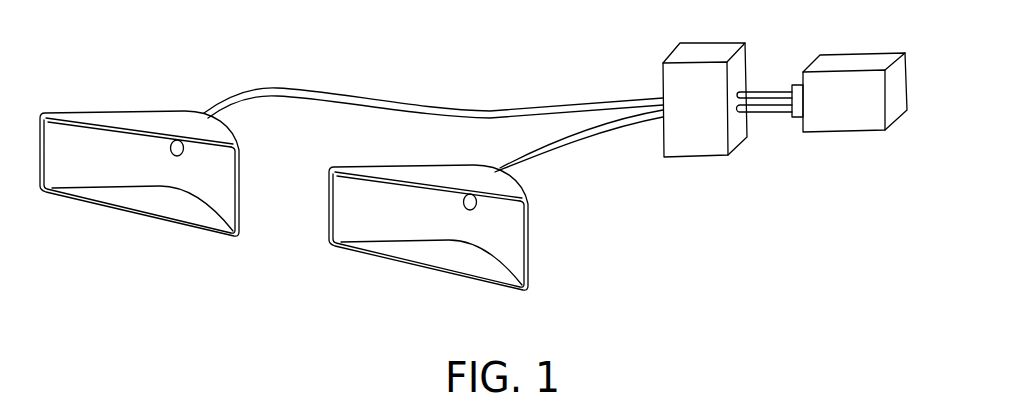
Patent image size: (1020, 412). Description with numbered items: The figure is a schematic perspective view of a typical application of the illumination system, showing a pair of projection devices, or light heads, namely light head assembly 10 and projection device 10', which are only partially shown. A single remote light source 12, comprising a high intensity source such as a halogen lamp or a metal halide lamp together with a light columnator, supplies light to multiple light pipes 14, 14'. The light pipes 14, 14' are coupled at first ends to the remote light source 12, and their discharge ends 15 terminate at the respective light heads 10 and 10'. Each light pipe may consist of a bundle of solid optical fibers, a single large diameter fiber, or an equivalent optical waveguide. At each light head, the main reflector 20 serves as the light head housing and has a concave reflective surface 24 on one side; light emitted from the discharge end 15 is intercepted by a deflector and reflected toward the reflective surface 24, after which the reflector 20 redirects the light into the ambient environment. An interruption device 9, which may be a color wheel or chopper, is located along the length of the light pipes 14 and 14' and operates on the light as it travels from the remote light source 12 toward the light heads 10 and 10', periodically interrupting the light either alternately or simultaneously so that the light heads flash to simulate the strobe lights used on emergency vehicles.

The light head assembly 10 is at (460, 253).
The projection device 10' is at (139, 206).
The interruption device 9 is at (702, 157).
The remote light source 12 is at (827, 132).
The light pipe 14 is at (579, 114).
The light pipe 14' is at (433, 80).
The discharge end 15 is at (493, 267).
The main reflector 20 is at (460, 228).
The reflective surface 24 is at (431, 273).